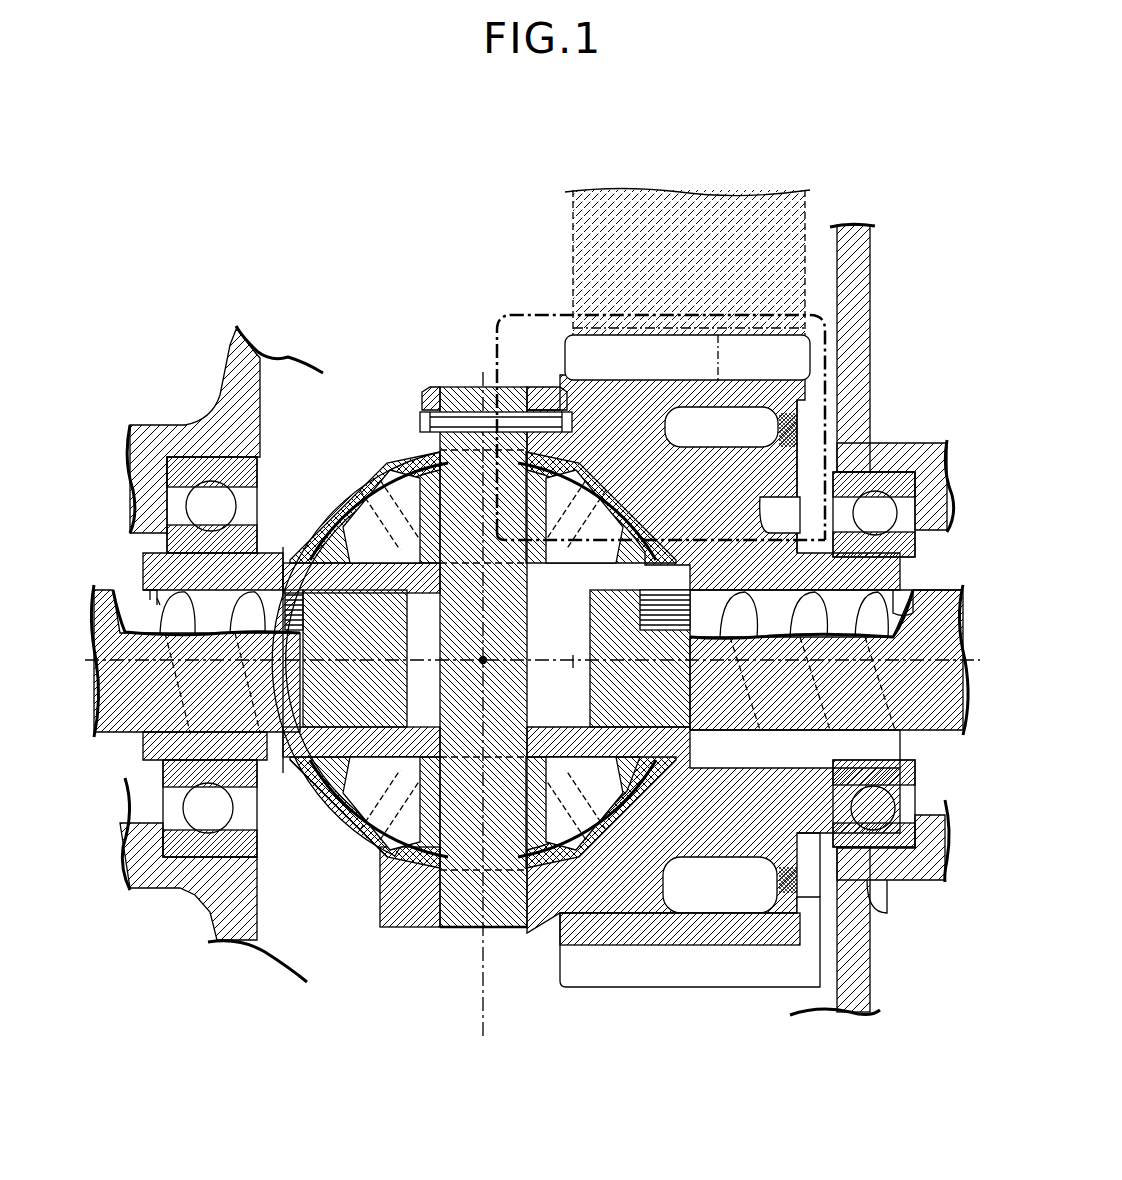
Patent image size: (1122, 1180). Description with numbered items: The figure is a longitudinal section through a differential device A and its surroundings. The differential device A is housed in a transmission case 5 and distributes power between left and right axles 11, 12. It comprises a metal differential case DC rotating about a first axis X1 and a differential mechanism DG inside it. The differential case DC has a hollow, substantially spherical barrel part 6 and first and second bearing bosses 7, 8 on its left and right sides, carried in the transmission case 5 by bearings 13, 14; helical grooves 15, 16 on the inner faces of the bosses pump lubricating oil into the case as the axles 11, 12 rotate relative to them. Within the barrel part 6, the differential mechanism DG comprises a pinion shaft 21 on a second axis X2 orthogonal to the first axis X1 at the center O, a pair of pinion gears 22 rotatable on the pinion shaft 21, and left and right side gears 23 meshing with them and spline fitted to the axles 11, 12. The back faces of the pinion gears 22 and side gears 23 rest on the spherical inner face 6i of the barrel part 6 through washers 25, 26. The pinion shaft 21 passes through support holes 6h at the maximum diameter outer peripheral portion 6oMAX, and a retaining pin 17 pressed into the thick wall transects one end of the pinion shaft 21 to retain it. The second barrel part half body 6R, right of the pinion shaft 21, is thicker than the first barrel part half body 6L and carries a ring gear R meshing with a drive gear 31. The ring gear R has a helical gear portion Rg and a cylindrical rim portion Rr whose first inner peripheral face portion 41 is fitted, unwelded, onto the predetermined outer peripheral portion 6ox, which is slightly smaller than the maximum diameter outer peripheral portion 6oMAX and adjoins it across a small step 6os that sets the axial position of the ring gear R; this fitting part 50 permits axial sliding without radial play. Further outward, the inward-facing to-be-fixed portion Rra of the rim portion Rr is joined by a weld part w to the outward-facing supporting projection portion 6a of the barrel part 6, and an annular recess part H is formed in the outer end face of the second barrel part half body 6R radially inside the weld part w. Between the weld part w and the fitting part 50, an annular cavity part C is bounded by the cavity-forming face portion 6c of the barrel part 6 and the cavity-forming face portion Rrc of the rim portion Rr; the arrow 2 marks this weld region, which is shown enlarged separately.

The section line 2 is at (478, 332).
The transmission case 5 is at (180, 430).
The barrel part 6 is at (601, 658).
The first barrel part half body 6L is at (287, 797).
The second barrel part half body 6R is at (713, 838).
The supporting projection portion 6a is at (797, 460).
The cavity-forming face portion 6c is at (778, 455).
The support hole 6h is at (512, 915).
The inner face 6i is at (694, 902).
The maximum diameter outer peripheral portion 6oMAX is at (505, 322).
The step 6os is at (565, 345).
The predetermined outer peripheral portion 6ox is at (673, 397).
The first bearing boss 7 is at (157, 750).
The second bearing boss 8 is at (880, 753).
The left axle 11 is at (120, 740).
The right axle 12 is at (950, 590).
The bearing 13 is at (207, 828).
The bearing 14 is at (878, 813).
The helical groove 15 is at (155, 573).
The helical groove 16 is at (875, 605).
The retaining pin 17 is at (462, 418).
The pinion shaft 21 is at (458, 918).
The pinion gear 22 is at (572, 463).
The side gear 23 is at (345, 870).
The washer 25 is at (553, 870).
The washer 26 is at (320, 518).
The drive gear 31 is at (573, 228).
The first inner peripheral face portion 41 is at (600, 392).
The fitting part 50 is at (693, 940).
The differential device A is at (375, 420).
The cavity part C is at (735, 902).
The differential case DC is at (333, 460).
The differential mechanism DG is at (460, 982).
The recess part H is at (845, 897).
The center O is at (486, 658).
The ring gear R is at (746, 1106).
The gear portion Rg is at (637, 993).
The rim portion Rr is at (757, 980).
The to-be-fixed portion Rra is at (797, 417).
The cavity-forming face portion Rrc is at (745, 410).
The first axis X1 is at (573, 668).
The second axis X2 is at (481, 1027).
The weld part w is at (797, 432).